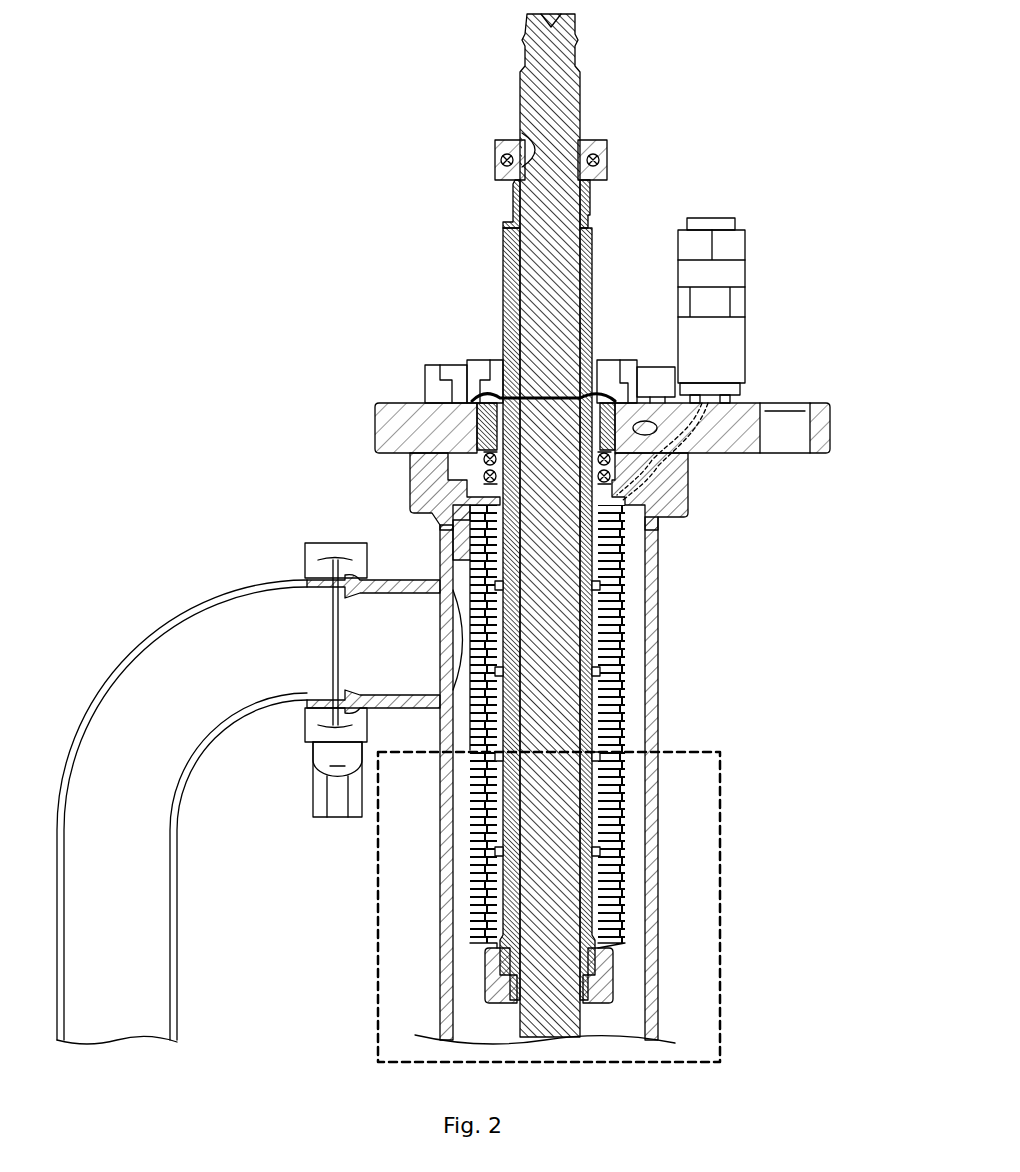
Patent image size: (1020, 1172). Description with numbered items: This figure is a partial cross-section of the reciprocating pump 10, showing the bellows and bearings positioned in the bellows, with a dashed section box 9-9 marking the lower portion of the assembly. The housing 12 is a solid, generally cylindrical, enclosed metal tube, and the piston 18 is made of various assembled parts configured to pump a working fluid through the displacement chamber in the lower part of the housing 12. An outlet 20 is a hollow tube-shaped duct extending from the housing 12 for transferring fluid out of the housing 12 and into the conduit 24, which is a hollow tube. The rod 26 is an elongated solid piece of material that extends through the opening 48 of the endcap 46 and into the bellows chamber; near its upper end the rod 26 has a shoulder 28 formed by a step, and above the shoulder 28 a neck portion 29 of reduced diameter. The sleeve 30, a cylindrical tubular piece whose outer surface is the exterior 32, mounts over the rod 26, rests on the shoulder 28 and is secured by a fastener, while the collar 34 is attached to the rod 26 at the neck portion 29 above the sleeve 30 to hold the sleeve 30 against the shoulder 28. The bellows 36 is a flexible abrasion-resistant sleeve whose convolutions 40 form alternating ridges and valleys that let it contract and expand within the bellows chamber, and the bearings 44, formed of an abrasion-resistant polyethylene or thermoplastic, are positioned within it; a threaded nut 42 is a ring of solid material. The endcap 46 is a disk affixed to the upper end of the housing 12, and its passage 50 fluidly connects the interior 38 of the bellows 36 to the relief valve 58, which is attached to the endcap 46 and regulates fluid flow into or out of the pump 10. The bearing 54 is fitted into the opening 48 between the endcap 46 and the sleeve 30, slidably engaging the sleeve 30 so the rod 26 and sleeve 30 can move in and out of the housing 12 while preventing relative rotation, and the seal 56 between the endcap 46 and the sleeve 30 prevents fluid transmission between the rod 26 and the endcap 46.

The reciprocating pump 10 is at (207, 142).
The housing 12 is at (440, 944).
The piston 18 is at (410, 483).
The outlet 20 is at (396, 579).
The conduit 24 is at (180, 606).
The rod 26 is at (520, 99).
The shoulder 28 is at (515, 228).
The neck portion 29 is at (526, 142).
The sleeve 30 is at (503, 333).
The exterior 32 is at (503, 280).
The collar 34 is at (610, 162).
The bellows 36 is at (627, 695).
The interior 38 is at (597, 543).
The convolutions 40 is at (602, 655).
The nut 42 is at (615, 985).
The bearings 44 is at (600, 586).
The endcap 46 is at (840, 400).
The opening 48 is at (552, 398).
The passage 50 is at (692, 430).
The bearing 54 is at (477, 425).
The seal 56 is at (484, 459).
The relief valve 58 is at (745, 248).
The section line 9-9 is at (722, 792).